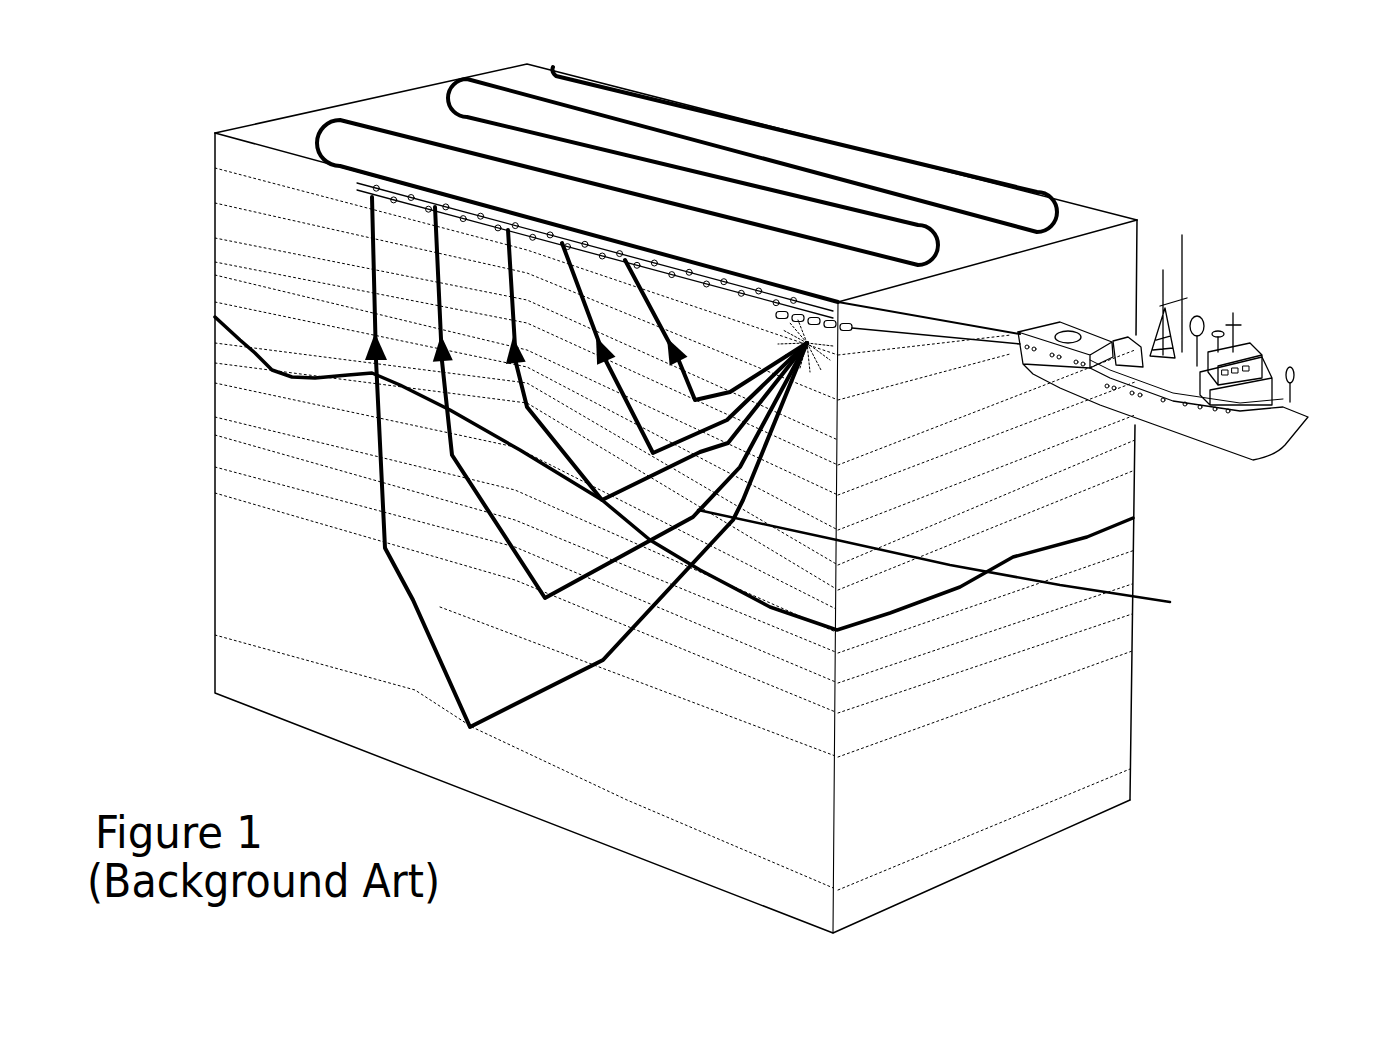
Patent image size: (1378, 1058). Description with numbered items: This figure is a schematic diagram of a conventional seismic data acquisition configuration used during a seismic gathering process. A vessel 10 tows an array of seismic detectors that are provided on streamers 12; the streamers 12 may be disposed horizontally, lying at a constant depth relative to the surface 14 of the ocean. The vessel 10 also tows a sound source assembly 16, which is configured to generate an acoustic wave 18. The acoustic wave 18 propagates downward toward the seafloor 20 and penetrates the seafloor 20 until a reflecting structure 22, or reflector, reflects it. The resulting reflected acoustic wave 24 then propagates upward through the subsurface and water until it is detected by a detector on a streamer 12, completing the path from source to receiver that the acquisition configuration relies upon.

The vessel 10 is at (1267, 337).
The streamers 12 is at (587, 235).
The surface of the ocean 14 is at (403, 152).
The sound source assembly 16 is at (840, 300).
The acoustic wave 18 is at (952, 562).
The seafloor 20 is at (1087, 520).
The reflecting structure 22 is at (470, 727).
The reflected acoustic wave 24 is at (382, 430).